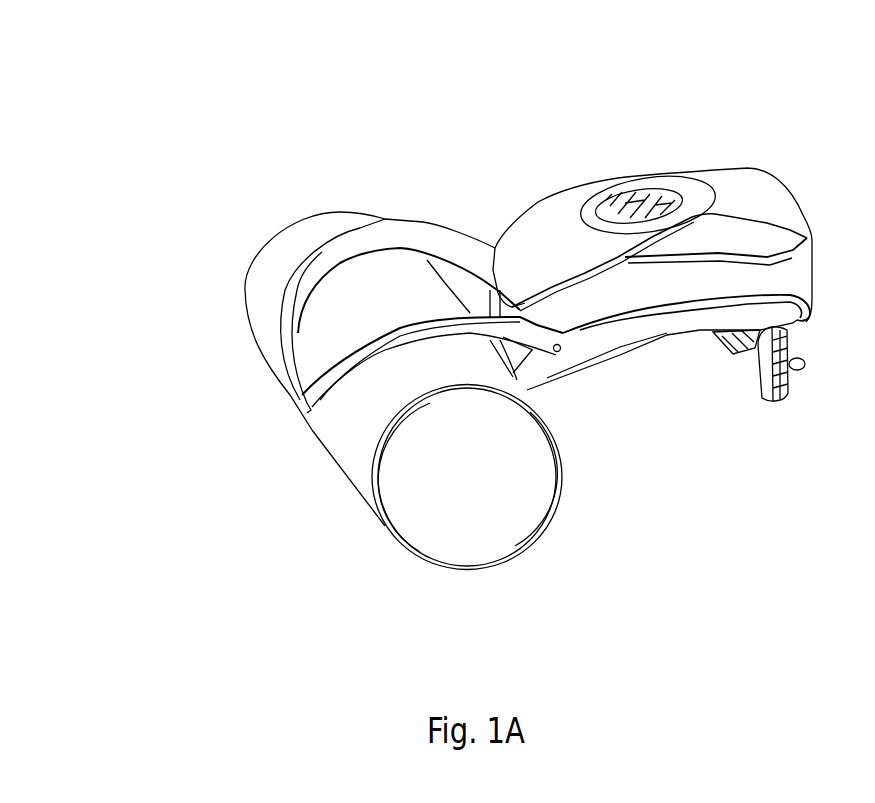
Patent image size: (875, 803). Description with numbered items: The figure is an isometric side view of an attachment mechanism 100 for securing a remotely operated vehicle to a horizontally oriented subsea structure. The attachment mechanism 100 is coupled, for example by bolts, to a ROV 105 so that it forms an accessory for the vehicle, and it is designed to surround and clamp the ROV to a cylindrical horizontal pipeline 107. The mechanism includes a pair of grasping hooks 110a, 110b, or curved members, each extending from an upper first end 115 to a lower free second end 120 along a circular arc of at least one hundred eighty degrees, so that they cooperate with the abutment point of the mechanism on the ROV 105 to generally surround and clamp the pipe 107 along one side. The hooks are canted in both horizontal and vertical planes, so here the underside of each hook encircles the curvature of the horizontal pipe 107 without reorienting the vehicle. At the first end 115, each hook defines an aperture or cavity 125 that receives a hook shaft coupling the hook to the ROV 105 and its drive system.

The attachment mechanism 100 is at (217, 72).
The ROV 105 is at (750, 200).
The horizontal pipeline 107 is at (473, 538).
The grasping hook 110a is at (340, 252).
The grasping hook 110b is at (375, 352).
The first end 115 is at (561, 343).
The second end 120 is at (290, 390).
The aperture or cavity 125 is at (559, 352).